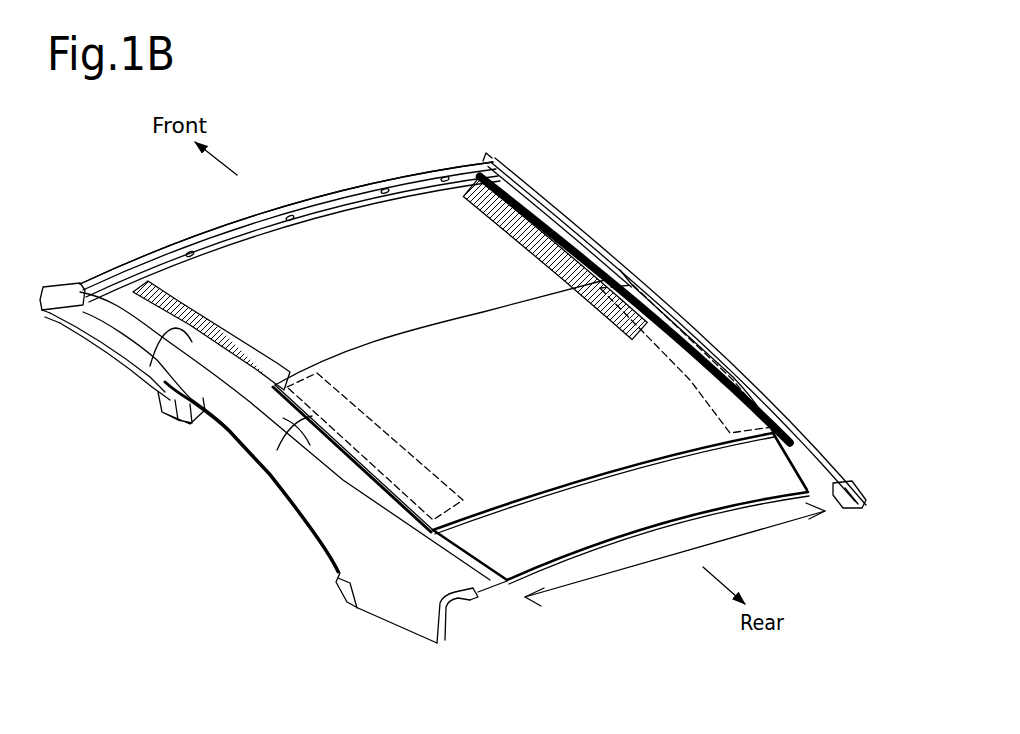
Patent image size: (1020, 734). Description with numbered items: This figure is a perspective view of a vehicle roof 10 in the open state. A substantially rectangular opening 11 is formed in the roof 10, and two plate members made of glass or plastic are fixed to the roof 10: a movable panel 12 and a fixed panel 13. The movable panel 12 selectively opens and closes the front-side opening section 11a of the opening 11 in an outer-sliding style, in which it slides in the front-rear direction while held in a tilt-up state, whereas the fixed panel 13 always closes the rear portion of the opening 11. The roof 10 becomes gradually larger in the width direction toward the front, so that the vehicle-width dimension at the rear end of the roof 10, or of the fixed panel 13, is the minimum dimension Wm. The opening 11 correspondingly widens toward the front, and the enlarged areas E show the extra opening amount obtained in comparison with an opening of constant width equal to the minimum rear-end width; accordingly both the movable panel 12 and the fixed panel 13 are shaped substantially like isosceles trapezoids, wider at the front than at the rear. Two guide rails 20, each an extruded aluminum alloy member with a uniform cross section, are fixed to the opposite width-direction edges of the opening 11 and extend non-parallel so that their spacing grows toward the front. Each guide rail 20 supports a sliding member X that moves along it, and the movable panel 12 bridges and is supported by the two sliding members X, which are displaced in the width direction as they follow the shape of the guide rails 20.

The roof 10 is at (553, 168).
The opening 11 is at (286, 223).
The front-side opening section 11a is at (227, 278).
The movable panel 12 is at (272, 470).
The fixed panel 13 is at (490, 541).
The guide rail 20 is at (563, 247).
The enlarged area E is at (507, 232).
The sliding member X is at (353, 393).
The minimum dimension Wm is at (620, 570).